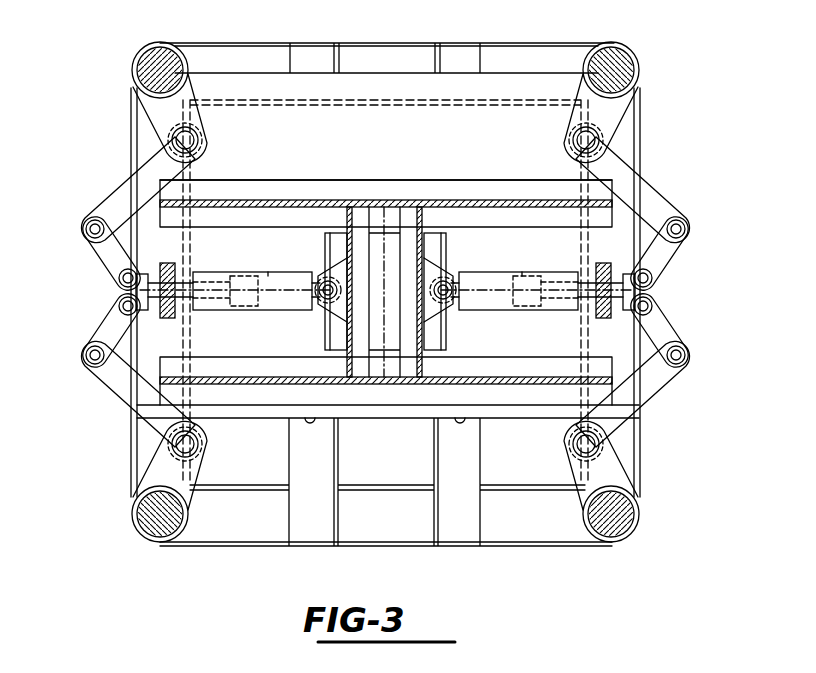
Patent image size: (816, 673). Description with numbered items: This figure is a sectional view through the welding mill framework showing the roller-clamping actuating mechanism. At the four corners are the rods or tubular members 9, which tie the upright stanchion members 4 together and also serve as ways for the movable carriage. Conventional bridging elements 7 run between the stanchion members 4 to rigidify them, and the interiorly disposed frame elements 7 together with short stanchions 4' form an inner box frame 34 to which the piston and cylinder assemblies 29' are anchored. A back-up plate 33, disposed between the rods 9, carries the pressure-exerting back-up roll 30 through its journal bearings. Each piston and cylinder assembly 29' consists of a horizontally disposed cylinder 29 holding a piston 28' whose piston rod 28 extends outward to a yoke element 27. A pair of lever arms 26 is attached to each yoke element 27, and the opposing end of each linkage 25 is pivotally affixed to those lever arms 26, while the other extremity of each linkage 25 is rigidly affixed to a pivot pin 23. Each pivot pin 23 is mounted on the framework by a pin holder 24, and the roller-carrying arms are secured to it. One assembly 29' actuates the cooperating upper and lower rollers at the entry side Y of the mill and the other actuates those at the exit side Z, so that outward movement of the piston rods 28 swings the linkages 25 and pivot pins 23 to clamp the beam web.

The upright column or stanchion member 4 is at (385, 275).
The short stanchion 4' is at (374, 291).
The bridging element 7 is at (387, 46).
The rod or tubular member 9 is at (152, 52).
The pivot pin 23 is at (190, 145).
The pin holder 24 is at (150, 107).
The linkage 25 is at (118, 189).
The lever arm 26 is at (98, 308).
The yoke element 27 is at (165, 270).
The piston rod 28 is at (385, 288).
The piston 28' is at (385, 312).
The cylinder 29 is at (385, 310).
The piston and cylinder assembly 29' is at (388, 254).
The pressure-exerting back-up roll 30 is at (441, 258).
The back-up plate 33 is at (376, 162).
The inner box frame 34 is at (382, 222).
The entry side Y is at (66, 266).
The exit side Z is at (694, 266).